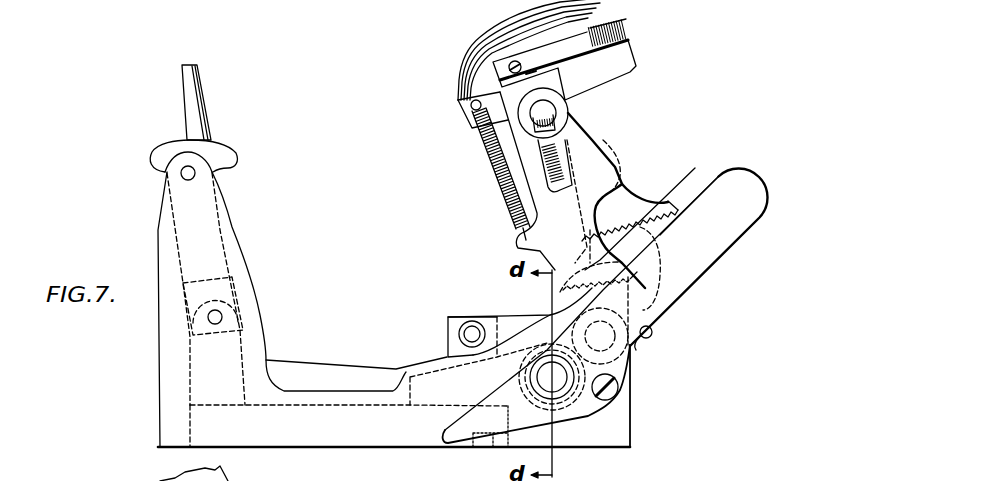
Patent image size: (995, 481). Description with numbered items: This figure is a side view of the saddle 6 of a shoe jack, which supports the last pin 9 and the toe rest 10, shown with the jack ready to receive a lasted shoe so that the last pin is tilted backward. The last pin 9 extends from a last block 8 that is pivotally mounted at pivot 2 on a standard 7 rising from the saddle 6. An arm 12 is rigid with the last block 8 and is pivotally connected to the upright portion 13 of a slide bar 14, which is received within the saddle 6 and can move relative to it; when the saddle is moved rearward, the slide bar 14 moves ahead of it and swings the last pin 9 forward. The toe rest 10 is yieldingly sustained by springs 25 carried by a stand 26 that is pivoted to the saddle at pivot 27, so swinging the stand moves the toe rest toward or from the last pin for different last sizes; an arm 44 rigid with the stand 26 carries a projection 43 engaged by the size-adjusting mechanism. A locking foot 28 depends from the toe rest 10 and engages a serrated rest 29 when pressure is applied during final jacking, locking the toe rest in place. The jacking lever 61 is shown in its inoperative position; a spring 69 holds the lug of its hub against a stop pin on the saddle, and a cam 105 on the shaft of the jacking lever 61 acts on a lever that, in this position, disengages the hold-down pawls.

The pivot 2 is at (181, 176).
The saddle 6 is at (343, 393).
The standard 7 is at (244, 251).
The last block 8 is at (223, 149).
The last pin 9 is at (207, 107).
The toe rest 10 is at (603, 11).
The arm 12 is at (226, 216).
The upright portion 13 is at (190, 373).
The slide bar 14 is at (375, 428).
The springs 25 is at (587, 134).
The stand 26 is at (598, 203).
The pivot 27 is at (634, 342).
The locking foot 28 is at (636, 219).
The serrated rest 29 is at (663, 303).
The projection 43 is at (456, 318).
The arm 44 is at (508, 315).
The jacking lever 61 is at (717, 244).
The spring 69 is at (631, 347).
The cam 105 is at (615, 427).